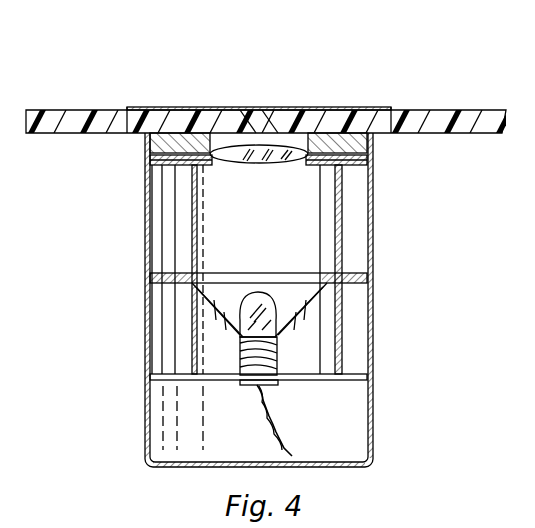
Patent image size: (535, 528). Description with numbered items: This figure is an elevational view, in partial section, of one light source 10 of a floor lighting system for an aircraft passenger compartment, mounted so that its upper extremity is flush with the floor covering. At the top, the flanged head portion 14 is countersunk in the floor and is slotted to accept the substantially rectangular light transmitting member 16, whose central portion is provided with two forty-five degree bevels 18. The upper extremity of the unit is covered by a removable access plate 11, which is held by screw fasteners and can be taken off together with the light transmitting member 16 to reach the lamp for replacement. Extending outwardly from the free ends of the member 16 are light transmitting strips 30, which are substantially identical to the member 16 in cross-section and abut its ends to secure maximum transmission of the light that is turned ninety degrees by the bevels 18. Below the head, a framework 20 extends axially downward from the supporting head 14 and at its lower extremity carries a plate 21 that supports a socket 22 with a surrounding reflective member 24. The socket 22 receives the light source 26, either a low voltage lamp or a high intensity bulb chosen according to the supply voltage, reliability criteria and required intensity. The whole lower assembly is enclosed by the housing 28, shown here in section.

The lighting fixture assembly 10 is at (203, 88).
The mounting plate 11 is at (305, 107).
The housing flange 14 is at (356, 147).
The panel 16 is at (168, 122).
The weld joint 18 is at (264, 116).
The inner housing 20 is at (327, 232).
The base plate 21 is at (163, 375).
The lamp socket 22 is at (280, 362).
The reflector 24 is at (222, 312).
The lamp bulb 26 is at (268, 300).
The outer housing 28 is at (374, 212).
The ceiling panel 30 is at (62, 109).